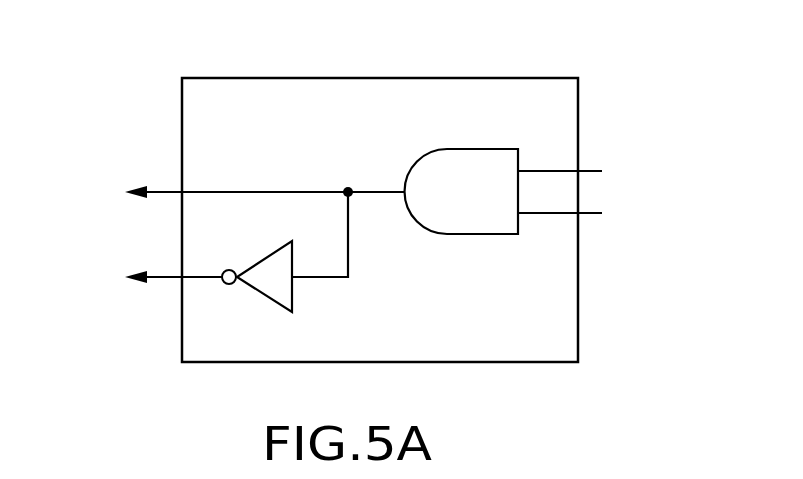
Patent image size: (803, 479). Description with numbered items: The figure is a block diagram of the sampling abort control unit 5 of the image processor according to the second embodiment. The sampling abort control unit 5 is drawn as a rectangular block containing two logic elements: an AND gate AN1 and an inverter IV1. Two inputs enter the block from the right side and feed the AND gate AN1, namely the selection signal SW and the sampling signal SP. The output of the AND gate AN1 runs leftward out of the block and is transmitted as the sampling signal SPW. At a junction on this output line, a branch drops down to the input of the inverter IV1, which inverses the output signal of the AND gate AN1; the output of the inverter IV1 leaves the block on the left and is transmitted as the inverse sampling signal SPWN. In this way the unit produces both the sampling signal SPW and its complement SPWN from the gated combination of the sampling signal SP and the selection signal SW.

The sampling abort control unit 5 is at (549, 79).
The AND gate AN1 is at (461, 176).
The inverter IV1 is at (285, 252).
The selection signal SW is at (584, 171).
The sampling signal SP is at (580, 213).
The sampling signal SPW is at (229, 191).
The inverse sampling signal SPWN is at (132, 278).